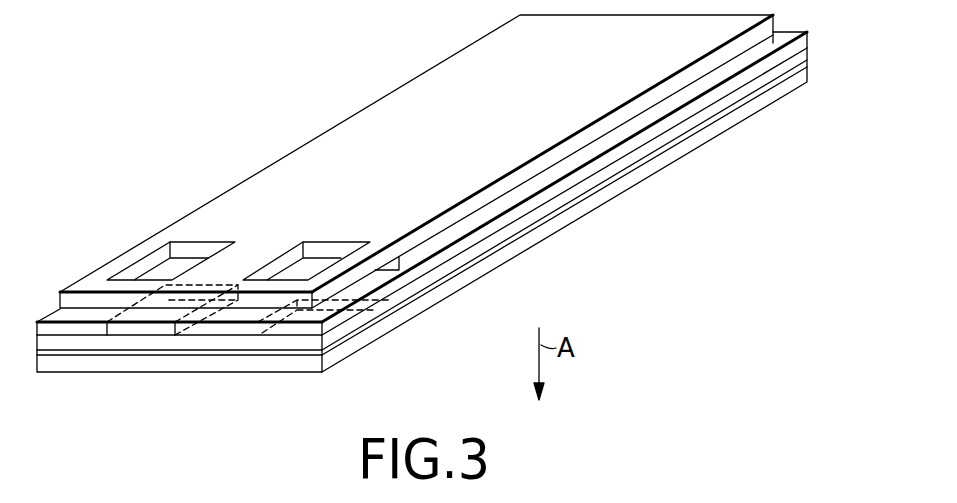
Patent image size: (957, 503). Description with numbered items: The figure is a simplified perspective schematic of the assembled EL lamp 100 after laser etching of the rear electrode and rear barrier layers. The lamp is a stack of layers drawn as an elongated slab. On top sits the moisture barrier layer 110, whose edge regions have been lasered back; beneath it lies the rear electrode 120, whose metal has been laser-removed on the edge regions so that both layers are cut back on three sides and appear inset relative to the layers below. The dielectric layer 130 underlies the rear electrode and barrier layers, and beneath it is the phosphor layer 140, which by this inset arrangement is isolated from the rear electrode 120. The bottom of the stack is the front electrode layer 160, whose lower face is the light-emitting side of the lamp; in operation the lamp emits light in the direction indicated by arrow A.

The EL lamp 100 is at (255, 76).
The moisture barrier layer 110 is at (428, 75).
The rear electrode 120 is at (488, 200).
The dielectric layer 130 is at (642, 137).
The phosphor layer 140 is at (705, 112).
The front electrode layer 160 is at (760, 110).